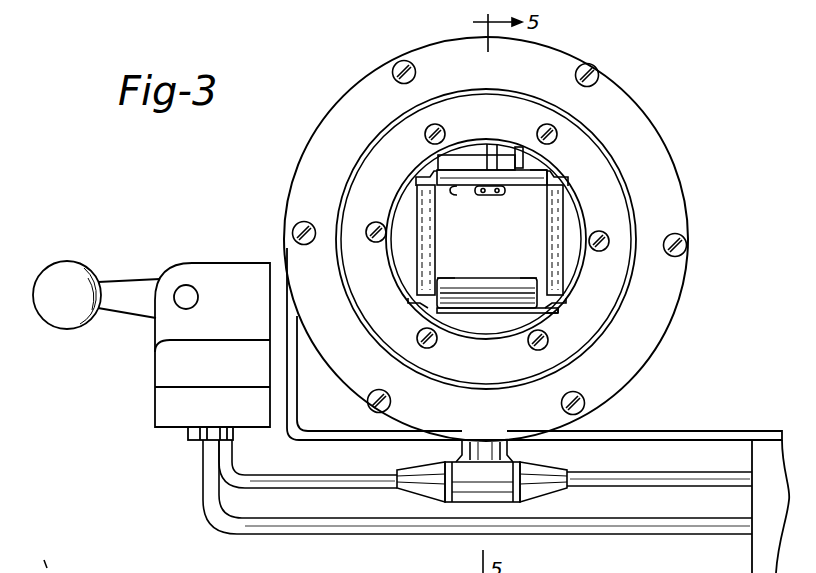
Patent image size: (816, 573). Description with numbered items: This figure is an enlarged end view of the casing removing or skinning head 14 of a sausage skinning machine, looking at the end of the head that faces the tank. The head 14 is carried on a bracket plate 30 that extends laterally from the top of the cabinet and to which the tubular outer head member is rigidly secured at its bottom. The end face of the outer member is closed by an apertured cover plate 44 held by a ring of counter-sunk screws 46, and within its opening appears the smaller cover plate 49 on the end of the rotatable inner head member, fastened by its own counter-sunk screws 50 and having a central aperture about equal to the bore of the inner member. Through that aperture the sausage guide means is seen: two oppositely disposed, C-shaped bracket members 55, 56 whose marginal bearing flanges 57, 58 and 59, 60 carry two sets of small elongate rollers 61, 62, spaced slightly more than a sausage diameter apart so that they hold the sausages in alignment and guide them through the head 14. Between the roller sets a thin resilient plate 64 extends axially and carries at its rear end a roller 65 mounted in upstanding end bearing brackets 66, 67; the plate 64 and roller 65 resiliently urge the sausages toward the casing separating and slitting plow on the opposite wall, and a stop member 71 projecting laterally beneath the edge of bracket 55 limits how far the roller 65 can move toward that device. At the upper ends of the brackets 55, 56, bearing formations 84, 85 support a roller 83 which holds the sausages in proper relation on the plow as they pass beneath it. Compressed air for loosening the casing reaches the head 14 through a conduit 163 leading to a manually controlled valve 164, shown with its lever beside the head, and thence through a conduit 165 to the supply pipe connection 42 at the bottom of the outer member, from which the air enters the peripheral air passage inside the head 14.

The skinning head 14 is at (637, 92).
The bracket plate 30 is at (655, 435).
The supply pipe 42 is at (505, 448).
The cover plate 44 is at (672, 161).
The counter-sunk screws 46 is at (689, 249).
The cover plate 49 is at (622, 280).
The counter-sunk screws 50 is at (600, 234).
The bracket member 55 is at (587, 218).
The bracket member 56 is at (392, 222).
The bearing flange 57 is at (566, 176).
The bearing flange 58 is at (566, 301).
The bearing flange 59 is at (420, 176).
The bearing flange 60 is at (410, 303).
The rollers 61 is at (547, 230).
The rollers 62 is at (435, 230).
The resilient plate 64 is at (480, 313).
The roller 65 is at (473, 288).
The end bearing bracket 66 is at (440, 284).
The end bearing bracket 67 is at (537, 279).
The stop member 71 is at (558, 313).
The roller 83 is at (477, 198).
The bearing formation 84 is at (437, 172).
The bearing formation 85 is at (550, 171).
The conduit 163 is at (612, 534).
The manually controlled valve 164 is at (163, 328).
The conduit 165 is at (347, 466).